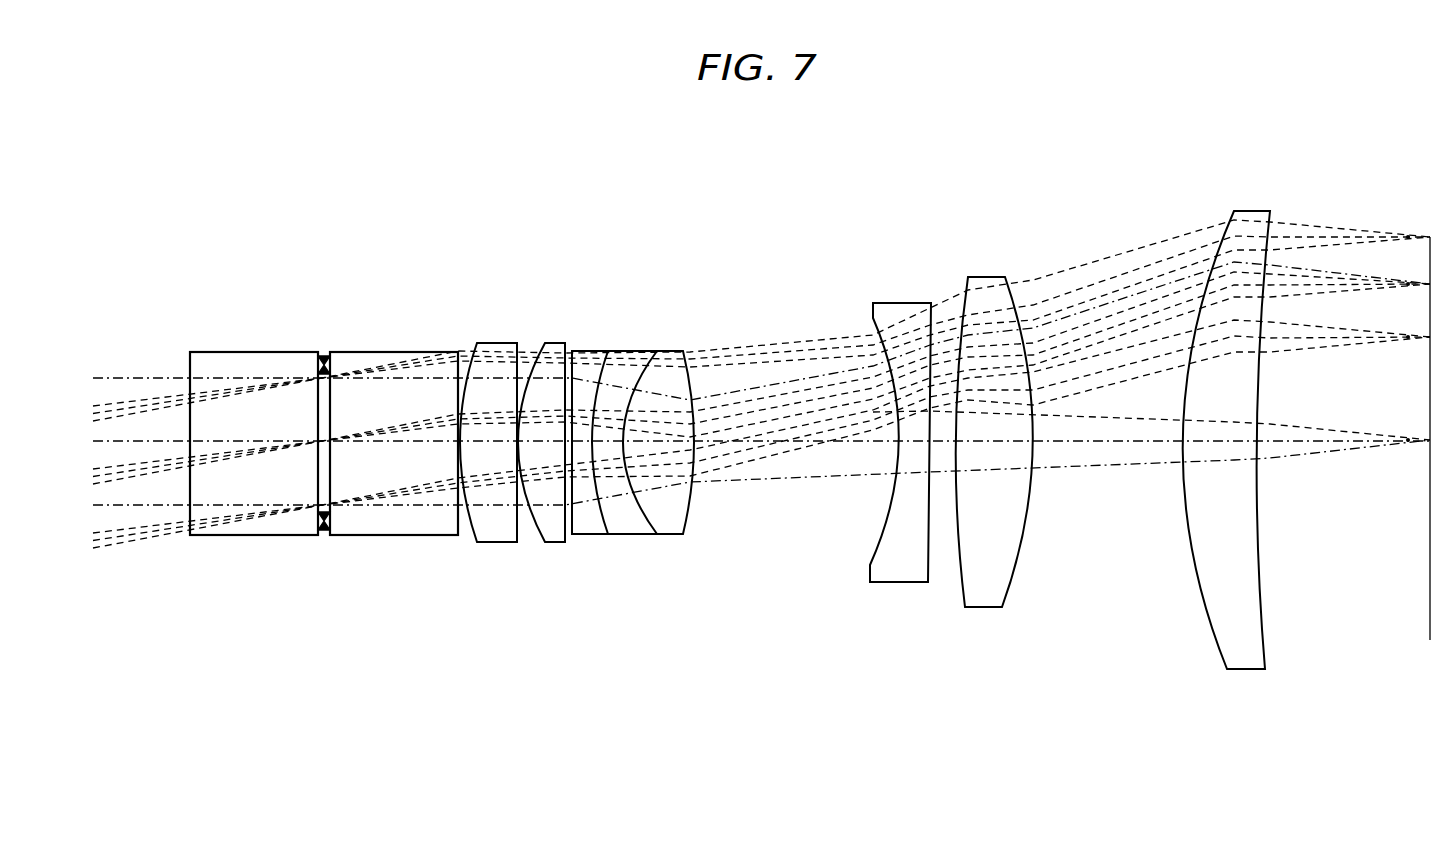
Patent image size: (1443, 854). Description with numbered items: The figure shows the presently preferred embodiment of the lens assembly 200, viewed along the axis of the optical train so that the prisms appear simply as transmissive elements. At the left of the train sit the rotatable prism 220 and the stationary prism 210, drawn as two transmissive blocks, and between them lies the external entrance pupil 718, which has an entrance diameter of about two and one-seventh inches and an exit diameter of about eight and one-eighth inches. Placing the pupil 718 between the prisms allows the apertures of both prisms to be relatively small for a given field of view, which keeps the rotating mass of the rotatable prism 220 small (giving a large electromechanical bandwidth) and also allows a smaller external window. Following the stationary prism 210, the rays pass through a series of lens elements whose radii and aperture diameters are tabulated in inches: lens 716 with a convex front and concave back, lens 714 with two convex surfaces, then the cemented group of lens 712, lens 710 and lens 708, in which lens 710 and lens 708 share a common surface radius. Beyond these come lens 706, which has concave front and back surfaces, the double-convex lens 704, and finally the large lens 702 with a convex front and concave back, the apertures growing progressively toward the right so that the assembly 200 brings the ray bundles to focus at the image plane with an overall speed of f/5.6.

The lens assembly 200 is at (458, 188).
The stationary prism 210 is at (398, 352).
The rotatable prism 220 is at (252, 352).
The pupil 718 is at (324, 352).
The lens 716 is at (497, 542).
The lens 714 is at (549, 542).
The lens 712 is at (590, 534).
The lens 710 is at (628, 534).
The lens 708 is at (672, 534).
The lens 706 is at (897, 582).
The lens 704 is at (985, 607).
The lens 702 is at (1248, 672).